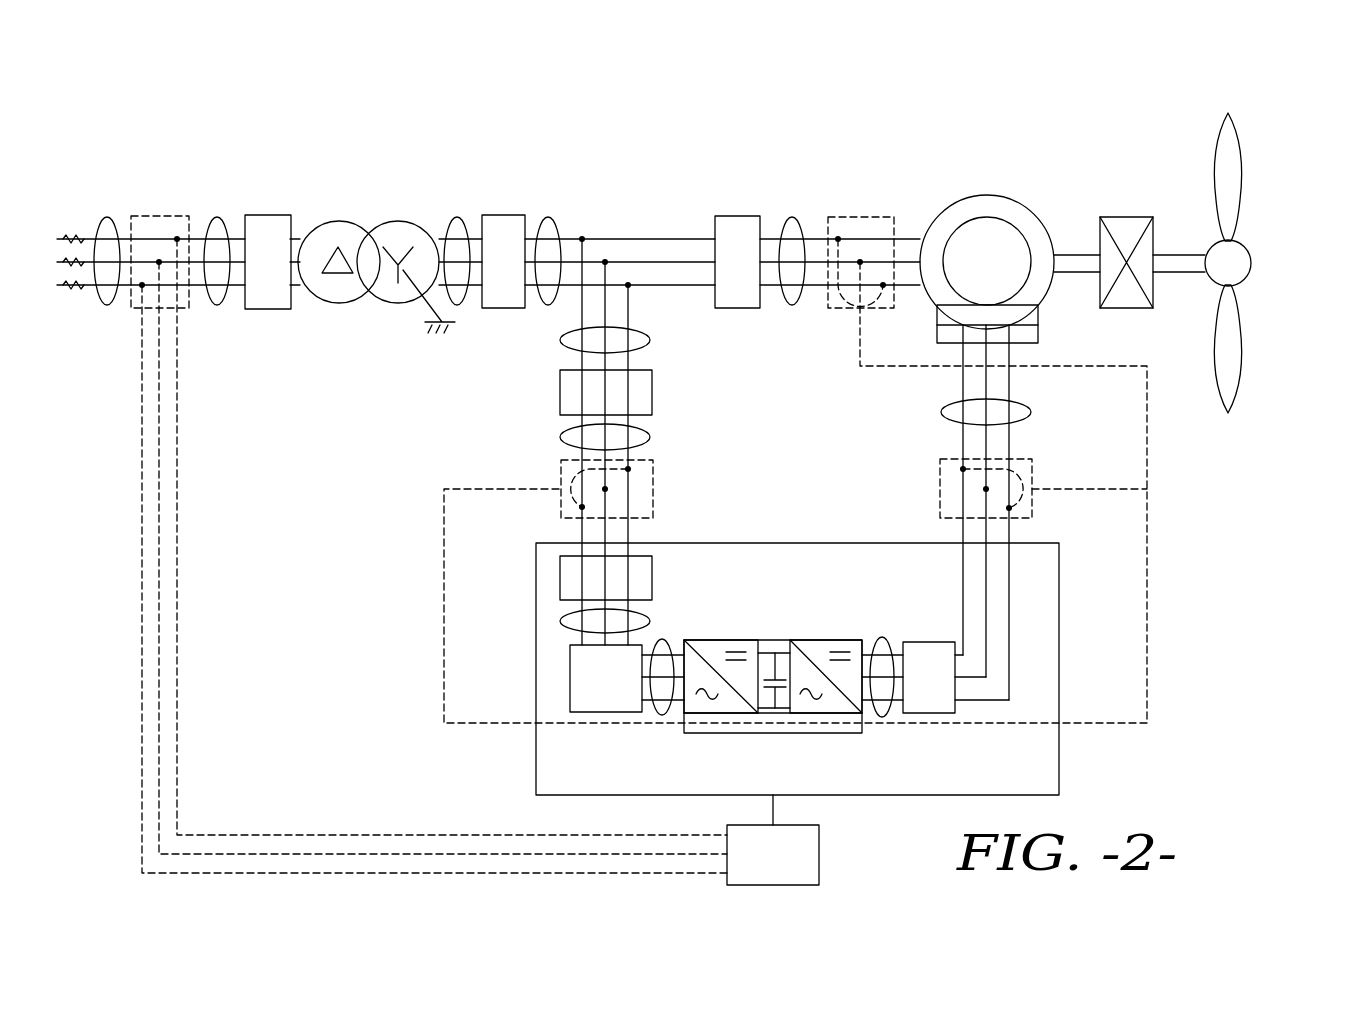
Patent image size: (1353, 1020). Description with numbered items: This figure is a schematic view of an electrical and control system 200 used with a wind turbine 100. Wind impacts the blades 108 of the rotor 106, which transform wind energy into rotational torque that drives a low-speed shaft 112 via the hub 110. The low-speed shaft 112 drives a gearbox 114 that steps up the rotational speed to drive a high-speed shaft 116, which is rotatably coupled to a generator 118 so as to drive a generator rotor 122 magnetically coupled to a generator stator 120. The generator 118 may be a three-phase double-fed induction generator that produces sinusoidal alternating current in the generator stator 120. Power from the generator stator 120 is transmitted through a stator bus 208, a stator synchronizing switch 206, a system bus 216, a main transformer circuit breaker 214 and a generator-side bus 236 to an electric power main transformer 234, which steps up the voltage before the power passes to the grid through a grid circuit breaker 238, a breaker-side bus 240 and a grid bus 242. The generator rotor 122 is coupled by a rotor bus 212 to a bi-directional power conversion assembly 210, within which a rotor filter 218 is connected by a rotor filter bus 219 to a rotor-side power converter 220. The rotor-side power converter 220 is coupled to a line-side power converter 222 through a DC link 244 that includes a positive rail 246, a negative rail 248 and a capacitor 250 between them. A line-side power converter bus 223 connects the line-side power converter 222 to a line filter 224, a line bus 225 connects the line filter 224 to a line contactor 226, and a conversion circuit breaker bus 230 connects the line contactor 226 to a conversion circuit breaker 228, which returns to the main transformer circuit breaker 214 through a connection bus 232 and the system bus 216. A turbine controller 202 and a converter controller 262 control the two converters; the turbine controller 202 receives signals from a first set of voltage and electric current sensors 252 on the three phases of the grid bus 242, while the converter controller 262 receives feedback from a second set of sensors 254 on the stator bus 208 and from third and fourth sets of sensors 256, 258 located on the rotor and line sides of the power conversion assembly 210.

The wind turbine 100 is at (1188, 112).
The rotor 106 is at (1253, 231).
The blades 108 is at (1243, 175).
The hub 110 is at (1252, 263).
The low-speed shaft 112 is at (1163, 252).
The gearbox 114 is at (1130, 217).
The high-speed shaft 116 is at (1088, 252).
The generator 118 is at (981, 172).
The generator stator 120 is at (1010, 200).
The generator rotor 122 is at (962, 240).
The electrical and control system 200 is at (333, 137).
The turbine controller 202 is at (752, 869).
The stator synchronizing switch 206 is at (735, 216).
The stator bus 208 is at (795, 216).
The power conversion assembly 210 is at (1059, 640).
The rotor bus 212 is at (1033, 412).
The main transformer circuit breaker 214 is at (503, 215).
The system bus 216 is at (550, 218).
The rotor filter 218 is at (928, 642).
The rotor filter bus 219 is at (882, 640).
The rotor-side power converter 220 is at (862, 712).
The line-side power converter 222 is at (682, 712).
The line-side power converter bus 223 is at (660, 640).
The line filter 224 is at (570, 690).
The line bus 225 is at (561, 621).
The line contactor 226 is at (560, 580).
The conversion circuit breaker 228 is at (652, 392).
The conversion circuit breaker bus 230 is at (651, 437).
The connection bus 232 is at (651, 340).
The main transformer 234 is at (395, 220).
The generator-side bus 236 is at (457, 218).
The grid circuit breaker 238 is at (270, 215).
The breaker-side bus 240 is at (217, 217).
The grid bus 242 is at (107, 217).
The DC link 244 is at (783, 599).
The positive rail 246 is at (780, 652).
The negative rail 248 is at (775, 713).
The capacitor 250 is at (775, 675).
The first set of voltage and electric current sensors 252 is at (163, 216).
The second set of voltage and electric current sensors 254 is at (858, 199).
The third set of voltage and electric current sensors 256 is at (940, 489).
The fourth set of voltage and electric current sensors 258 is at (653, 499).
The converter controller 262 is at (820, 733).